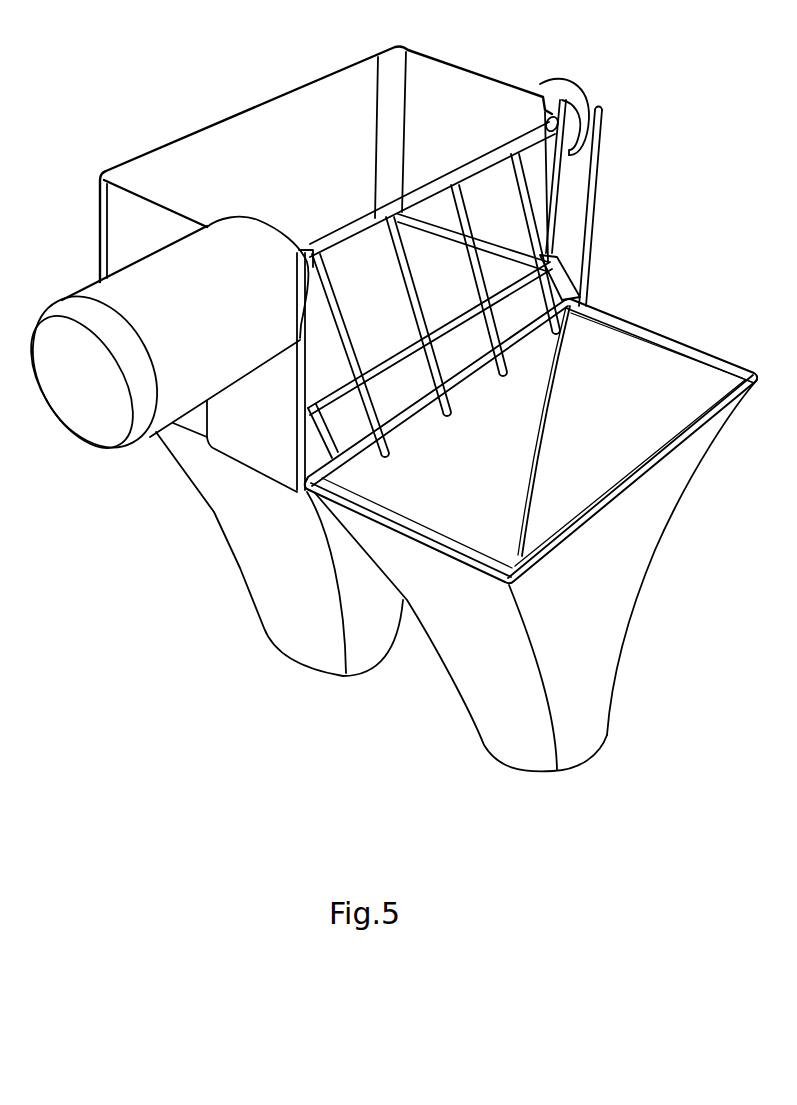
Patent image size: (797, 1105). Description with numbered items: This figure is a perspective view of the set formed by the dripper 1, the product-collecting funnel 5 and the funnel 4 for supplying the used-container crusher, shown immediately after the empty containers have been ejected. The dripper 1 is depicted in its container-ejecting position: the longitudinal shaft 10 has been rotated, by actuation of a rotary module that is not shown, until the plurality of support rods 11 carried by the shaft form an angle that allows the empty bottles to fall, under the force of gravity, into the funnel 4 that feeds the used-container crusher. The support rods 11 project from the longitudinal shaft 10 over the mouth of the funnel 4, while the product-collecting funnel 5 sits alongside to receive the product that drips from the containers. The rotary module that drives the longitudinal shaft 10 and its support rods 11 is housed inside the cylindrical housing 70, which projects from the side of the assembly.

The dripper 1 is at (93, 283).
The funnel for supplying the used-container crusher 4 is at (455, 636).
The product-collecting funnel 5 is at (444, 130).
The longitudinal shaft 10 is at (357, 218).
The support rods 11 is at (535, 232).
The cylindrical housing 70 is at (187, 267).